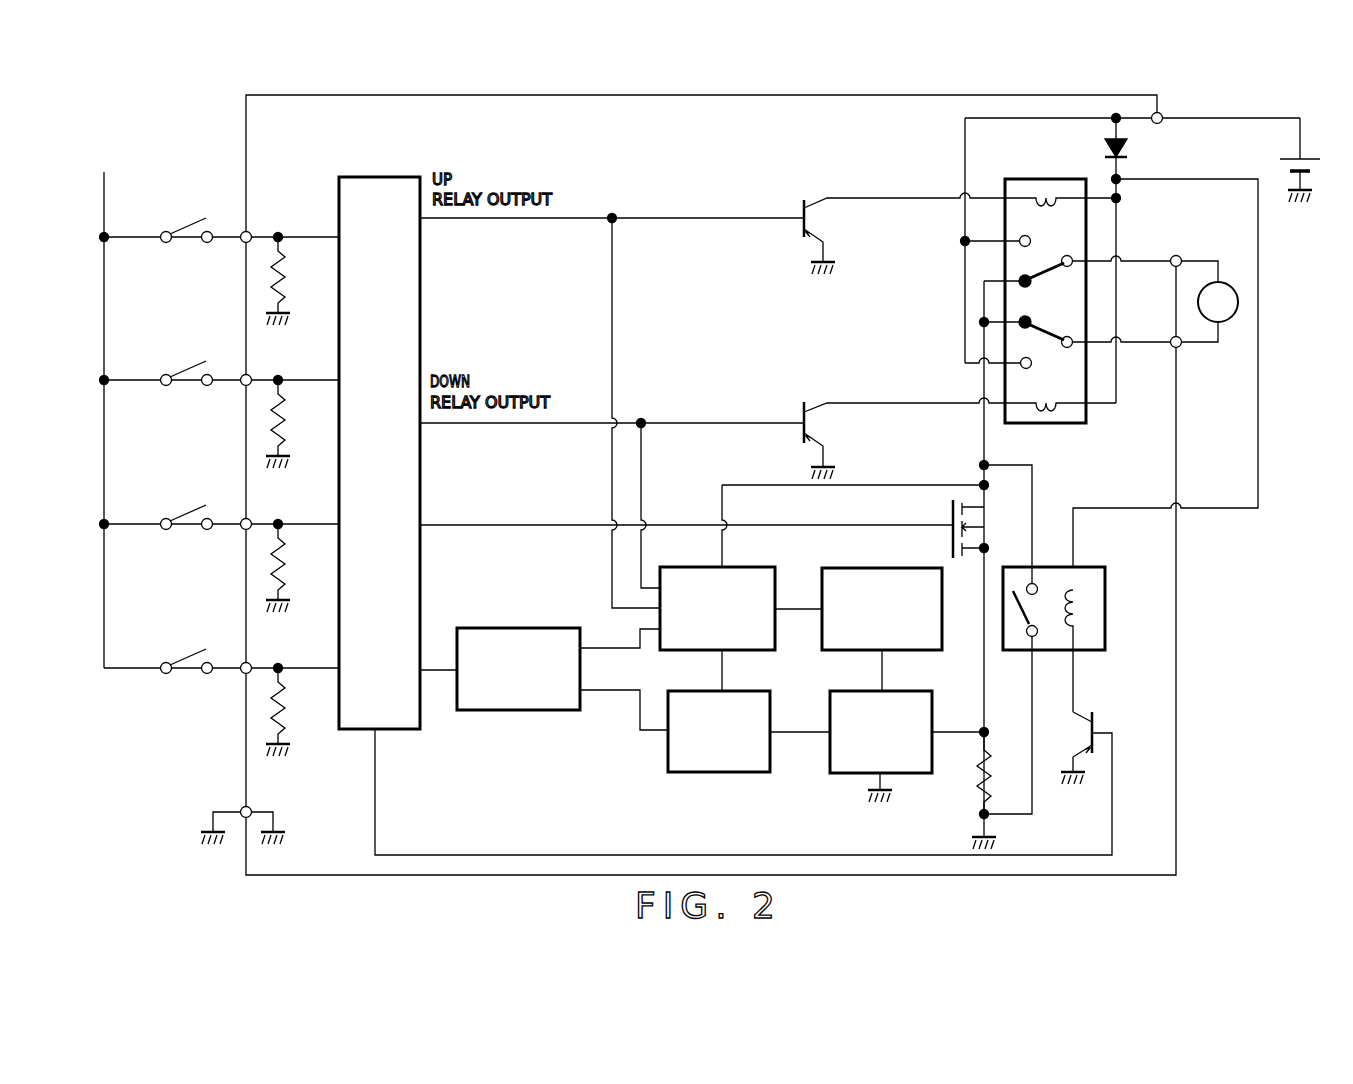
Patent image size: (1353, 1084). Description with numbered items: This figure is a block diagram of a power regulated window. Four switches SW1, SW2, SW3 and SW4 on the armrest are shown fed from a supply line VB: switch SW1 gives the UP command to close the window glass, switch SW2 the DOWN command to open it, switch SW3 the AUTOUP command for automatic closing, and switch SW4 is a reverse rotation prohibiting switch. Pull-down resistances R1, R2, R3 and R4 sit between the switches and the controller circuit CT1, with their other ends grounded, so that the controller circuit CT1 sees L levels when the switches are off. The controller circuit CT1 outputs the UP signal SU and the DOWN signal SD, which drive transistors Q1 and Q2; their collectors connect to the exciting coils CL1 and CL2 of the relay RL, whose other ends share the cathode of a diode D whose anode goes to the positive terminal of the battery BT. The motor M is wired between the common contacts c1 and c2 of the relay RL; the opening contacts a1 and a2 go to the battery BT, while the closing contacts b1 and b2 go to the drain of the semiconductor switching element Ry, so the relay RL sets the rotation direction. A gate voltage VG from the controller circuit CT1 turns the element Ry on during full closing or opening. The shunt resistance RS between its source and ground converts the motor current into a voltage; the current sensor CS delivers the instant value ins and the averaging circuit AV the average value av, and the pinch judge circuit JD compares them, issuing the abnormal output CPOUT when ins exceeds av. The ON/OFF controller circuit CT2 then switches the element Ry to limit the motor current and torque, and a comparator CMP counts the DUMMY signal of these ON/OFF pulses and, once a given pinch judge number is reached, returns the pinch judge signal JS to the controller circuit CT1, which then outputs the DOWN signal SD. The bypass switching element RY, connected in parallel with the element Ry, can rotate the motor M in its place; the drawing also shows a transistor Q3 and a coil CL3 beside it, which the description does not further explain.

The battery voltage supply line VB is at (105, 406).
The switch SW1 is at (198, 222).
The switch SW2 is at (198, 364).
The switch SW3 is at (198, 508).
The switch SW4 is at (198, 652).
The UP command UP is at (215, 258).
The DOWN command DOWN is at (199, 401).
The AUTOUP command AUTOUP is at (171, 546).
The pull-down resistance R1 is at (285, 267).
The pull-down resistance R2 is at (285, 410).
The pull-down resistance R3 is at (285, 554).
The pull-down resistance R4 is at (285, 698).
The controller circuit CT1 is at (412, 173).
The UP signal SU is at (670, 218).
The DOWN signal SD is at (670, 423).
The transistor Q1 is at (822, 218).
The transistor Q2 is at (822, 424).
The relay drive transistor Q3 is at (1097, 724).
The relay RL is at (1068, 178).
The exciting coil CL1 is at (1053, 190).
The exciting coil CL2 is at (1040, 408).
The relay coil CL3 is at (1083, 638).
The opening contact a1 is at (1005, 234).
The closing contact b1 is at (1010, 297).
The opening contact a2 is at (1010, 317).
The closing contact b2 is at (1010, 376).
The common contact c1 is at (1077, 253).
The common contact c2 is at (1073, 354).
The motor M is at (1218, 302).
The diode D is at (1123, 143).
The battery BT is at (1298, 162).
The gate voltage VG is at (775, 524).
The semiconductor switching element Ry is at (950, 524).
The comparator CMP is at (488, 628).
The pinch judge signal JS is at (438, 672).
The abnormal output CPOUT is at (606, 692).
The DUMMY signal DUMMY is at (601, 646).
The ON/OFF controller circuit CT2 is at (732, 568).
The pinch judge circuit JD is at (712, 690).
The averaging circuit AV is at (872, 568).
The average value av is at (797, 612).
The current sensor CS is at (892, 690).
The instant motor current value ins is at (797, 736).
The shunt resistance RS is at (973, 770).
The bypass switching element RY is at (1083, 569).